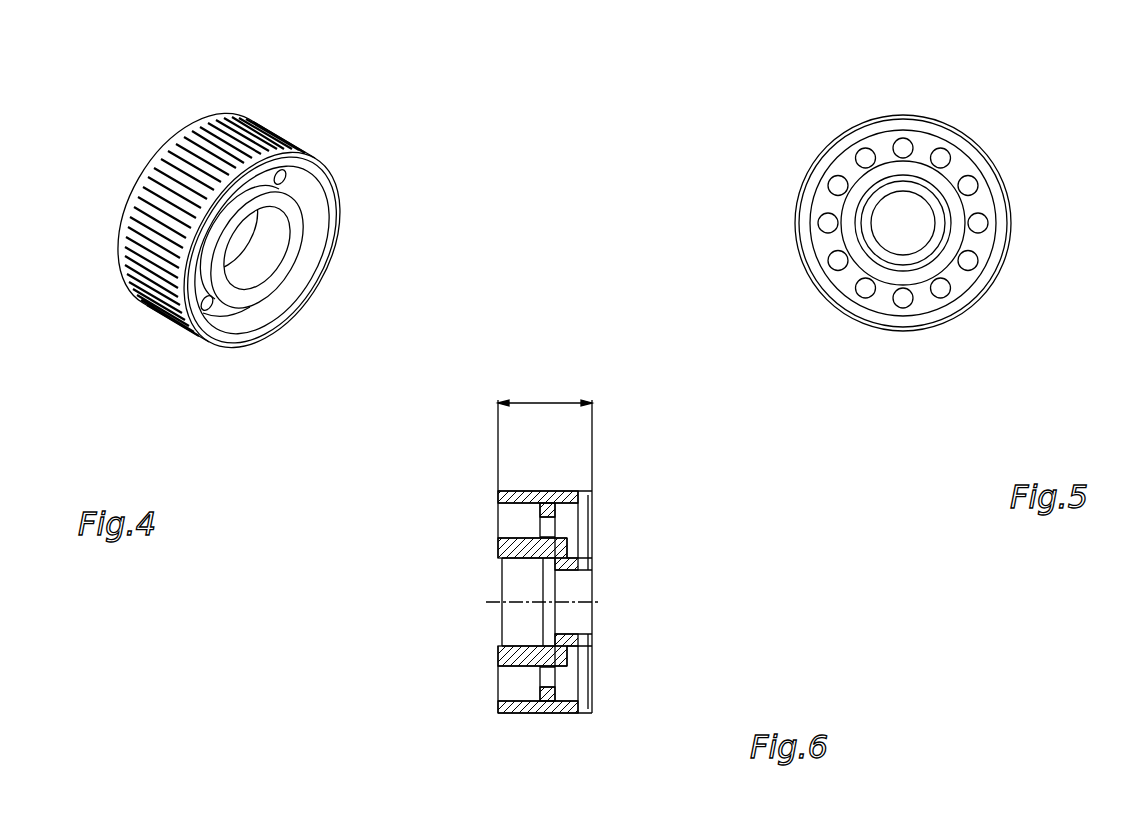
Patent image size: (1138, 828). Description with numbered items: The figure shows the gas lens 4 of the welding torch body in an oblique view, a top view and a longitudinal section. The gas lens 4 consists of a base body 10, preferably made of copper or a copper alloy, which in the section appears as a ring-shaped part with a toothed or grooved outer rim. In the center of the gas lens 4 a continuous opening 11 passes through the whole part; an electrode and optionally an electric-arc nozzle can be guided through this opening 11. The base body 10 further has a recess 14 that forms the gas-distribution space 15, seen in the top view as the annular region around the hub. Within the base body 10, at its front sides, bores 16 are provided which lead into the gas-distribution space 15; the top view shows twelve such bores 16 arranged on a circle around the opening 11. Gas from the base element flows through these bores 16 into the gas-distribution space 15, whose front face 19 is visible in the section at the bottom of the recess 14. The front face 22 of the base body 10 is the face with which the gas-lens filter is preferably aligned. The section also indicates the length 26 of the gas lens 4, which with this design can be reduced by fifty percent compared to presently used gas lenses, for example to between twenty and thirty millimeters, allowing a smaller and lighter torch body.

In FIG. 4, the gas lens 4 is at (298, 244).
In FIG. 5, the gas lens 4 is at (896, 241).
In FIG. 6, the gas lens 4 is at (535, 559).
In FIG. 4, the base body 10 is at (157, 270).
In FIG. 5, the base body 10 is at (843, 130).
In FIG. 6, the base body 10 is at (552, 705).
In FIG. 4, the continuous opening 11 is at (253, 248).
In FIG. 5, the continuous opening 11 is at (917, 225).
In FIG. 6, the continuous opening 11 is at (568, 615).
In FIG. 4, the recess 14 is at (310, 188).
In FIG. 5, the recess 14 is at (842, 285).
In FIG. 6, the recess 14 is at (513, 517).
In FIG. 4, the gas-distribution space 15 is at (235, 325).
In FIG. 5, the gas-distribution space 15 is at (980, 197).
In FIG. 6, the gas-distribution space 15 is at (503, 528).
In FIG. 4, the bores 16 is at (283, 175).
In FIG. 5, the bores 16 is at (940, 156).
In FIG. 6, the bores 16 is at (542, 522).
In FIG. 6, the front face of the gas-distribution space 19 is at (533, 523).
In FIG. 4, the front face of the base body 22 is at (257, 250).
In FIG. 6, the front face of the base body 22 is at (497, 577).
In FIG. 6, the length 26 is at (546, 403).